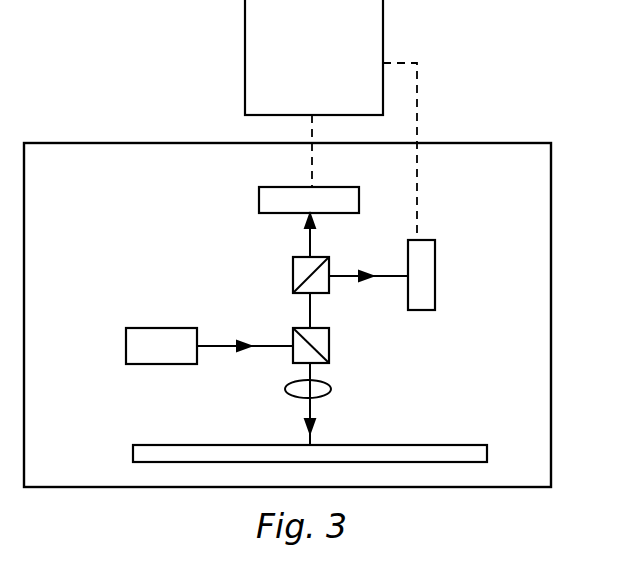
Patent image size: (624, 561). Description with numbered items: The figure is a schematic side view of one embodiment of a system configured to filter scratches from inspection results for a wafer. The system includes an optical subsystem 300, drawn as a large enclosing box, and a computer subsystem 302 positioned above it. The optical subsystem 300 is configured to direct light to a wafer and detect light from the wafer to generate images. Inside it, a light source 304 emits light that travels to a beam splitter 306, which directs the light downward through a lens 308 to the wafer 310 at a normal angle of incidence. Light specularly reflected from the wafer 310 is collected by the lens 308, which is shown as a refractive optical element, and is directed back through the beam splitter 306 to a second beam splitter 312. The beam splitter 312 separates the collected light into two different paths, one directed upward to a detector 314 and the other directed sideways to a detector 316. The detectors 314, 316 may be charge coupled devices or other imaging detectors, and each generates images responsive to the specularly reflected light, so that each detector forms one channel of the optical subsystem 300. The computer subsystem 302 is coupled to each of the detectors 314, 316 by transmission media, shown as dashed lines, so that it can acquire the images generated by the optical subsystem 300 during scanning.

The optical subsystem 300 is at (551, 257).
The computer subsystem 302 is at (331, 120).
The light source 304 is at (126, 346).
The beam splitter 306 is at (329, 345).
The lens 308 is at (329, 391).
The wafer 310 is at (145, 445).
The beam splitter 312 is at (293, 276).
The detector 314 is at (259, 203).
The detector 316 is at (435, 254).